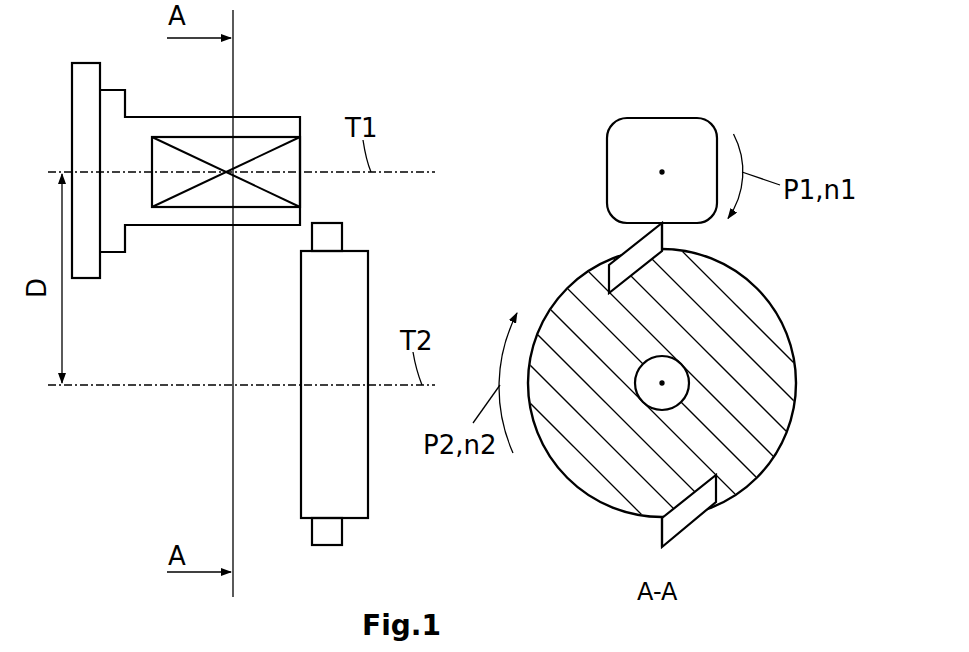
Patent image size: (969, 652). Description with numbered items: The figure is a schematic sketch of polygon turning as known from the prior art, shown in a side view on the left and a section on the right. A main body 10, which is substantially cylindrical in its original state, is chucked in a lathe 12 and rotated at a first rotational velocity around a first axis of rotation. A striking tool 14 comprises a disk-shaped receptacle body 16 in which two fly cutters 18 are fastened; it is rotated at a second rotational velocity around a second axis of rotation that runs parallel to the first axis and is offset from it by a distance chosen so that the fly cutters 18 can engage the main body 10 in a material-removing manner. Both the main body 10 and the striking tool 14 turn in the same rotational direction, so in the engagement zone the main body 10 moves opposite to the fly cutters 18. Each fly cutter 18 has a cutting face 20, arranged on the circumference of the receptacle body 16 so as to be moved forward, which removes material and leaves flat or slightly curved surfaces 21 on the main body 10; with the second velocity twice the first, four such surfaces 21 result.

The main body 10 is at (275, 115).
The lathe 12 is at (90, 63).
The striking tool 14 is at (396, 453).
The receptacle body 16 is at (346, 497).
The fly cutters 18 is at (343, 238).
The cutting face 20 is at (664, 240).
The flat or slightly curved surfaces 21 is at (673, 118).